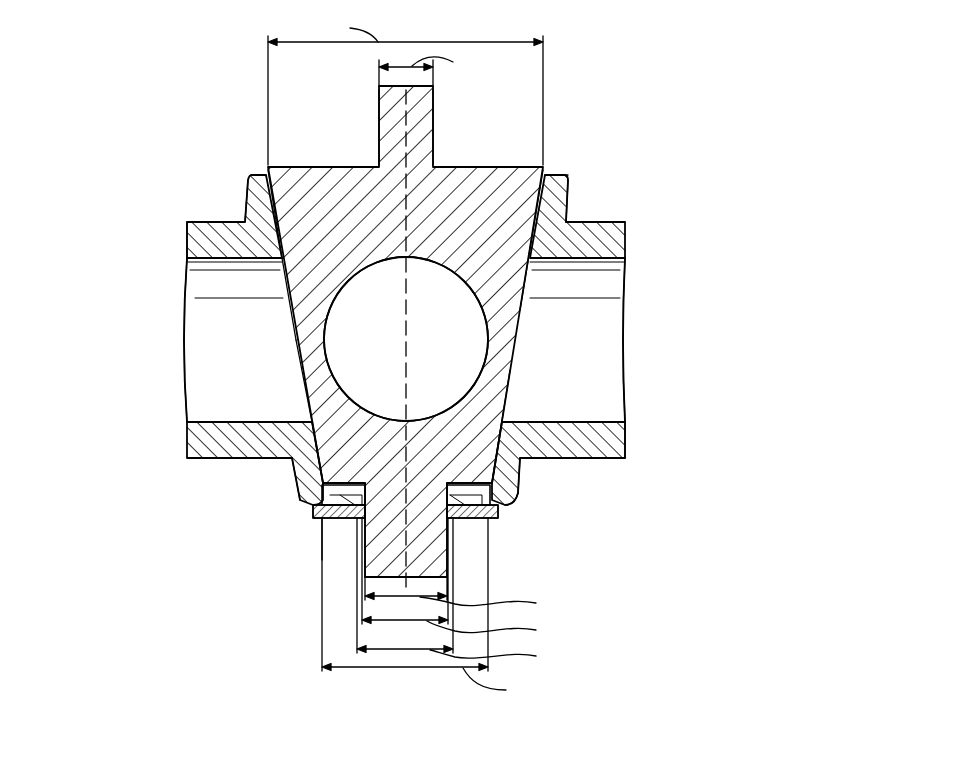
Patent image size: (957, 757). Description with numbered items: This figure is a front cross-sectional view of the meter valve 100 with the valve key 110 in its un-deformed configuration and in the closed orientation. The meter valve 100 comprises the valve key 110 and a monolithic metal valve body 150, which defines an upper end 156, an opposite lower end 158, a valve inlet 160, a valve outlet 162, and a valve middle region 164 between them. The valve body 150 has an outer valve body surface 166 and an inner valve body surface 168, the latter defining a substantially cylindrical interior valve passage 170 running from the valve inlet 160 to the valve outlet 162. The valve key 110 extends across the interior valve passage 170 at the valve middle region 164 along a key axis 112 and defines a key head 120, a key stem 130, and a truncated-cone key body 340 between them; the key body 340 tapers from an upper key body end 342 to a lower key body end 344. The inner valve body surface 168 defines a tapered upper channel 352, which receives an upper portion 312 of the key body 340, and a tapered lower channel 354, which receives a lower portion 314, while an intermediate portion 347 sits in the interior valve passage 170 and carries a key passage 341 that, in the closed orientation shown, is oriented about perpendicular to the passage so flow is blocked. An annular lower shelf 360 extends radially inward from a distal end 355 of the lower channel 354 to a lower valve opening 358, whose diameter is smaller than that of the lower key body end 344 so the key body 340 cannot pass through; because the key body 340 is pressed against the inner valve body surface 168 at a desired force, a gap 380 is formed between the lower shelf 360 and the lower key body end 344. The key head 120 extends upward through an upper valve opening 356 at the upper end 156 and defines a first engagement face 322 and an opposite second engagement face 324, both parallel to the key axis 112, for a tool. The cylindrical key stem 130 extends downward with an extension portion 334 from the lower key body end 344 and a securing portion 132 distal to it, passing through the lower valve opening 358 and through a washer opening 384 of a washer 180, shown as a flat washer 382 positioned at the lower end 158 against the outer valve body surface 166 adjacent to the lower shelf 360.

The meter valve 100 is at (730, 124).
The valve key 110 is at (486, 152).
The key axis 112 is at (408, 325).
The key head 120 is at (408, 128).
The key stem 130 is at (449, 547).
The securing portion 132 is at (365, 545).
The valve body 150 is at (158, 240).
The upper end 156 is at (557, 172).
The lower end 158 is at (500, 512).
The valve inlet 160 is at (185, 248).
The valve outlet 162 is at (623, 433).
The valve middle region 164 is at (248, 200).
The outer valve body surface 166 is at (582, 185).
The inner valve body surface 168 is at (213, 325).
The interior valve passage 170 is at (580, 318).
The washer 180 is at (313, 511).
The upper portion 312 is at (484, 228).
The lower portion 314 is at (348, 445).
The first engagement face 322 is at (372, 119).
The second engagement face 324 is at (444, 100).
The extension portion 334 is at (452, 416).
The key body 340 is at (325, 297).
The key passage 341 is at (395, 503).
The upper key body end 342 is at (312, 166).
The lower key body end 344 is at (345, 483).
The intermediate portion 347 is at (312, 346).
The upper channel 352 is at (562, 211).
The lower channel 354 is at (515, 449).
The distal end 355 is at (503, 488).
The upper valve opening 356 is at (245, 178).
The lower valve opening 358 is at (310, 496).
The lower shelf 360 is at (299, 487).
The gap 380 is at (498, 518).
The flat washer 382 is at (339, 511).
The washer opening 384 is at (330, 518).